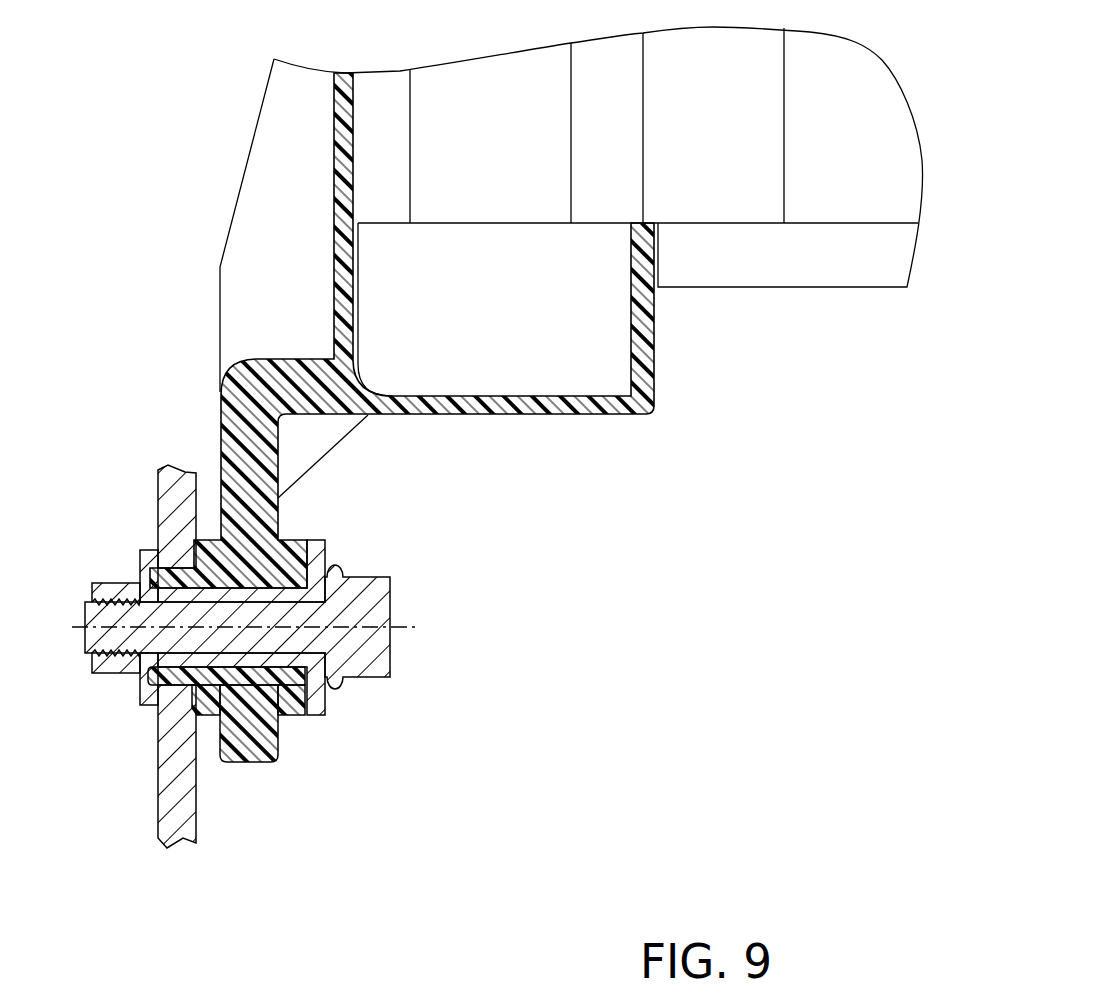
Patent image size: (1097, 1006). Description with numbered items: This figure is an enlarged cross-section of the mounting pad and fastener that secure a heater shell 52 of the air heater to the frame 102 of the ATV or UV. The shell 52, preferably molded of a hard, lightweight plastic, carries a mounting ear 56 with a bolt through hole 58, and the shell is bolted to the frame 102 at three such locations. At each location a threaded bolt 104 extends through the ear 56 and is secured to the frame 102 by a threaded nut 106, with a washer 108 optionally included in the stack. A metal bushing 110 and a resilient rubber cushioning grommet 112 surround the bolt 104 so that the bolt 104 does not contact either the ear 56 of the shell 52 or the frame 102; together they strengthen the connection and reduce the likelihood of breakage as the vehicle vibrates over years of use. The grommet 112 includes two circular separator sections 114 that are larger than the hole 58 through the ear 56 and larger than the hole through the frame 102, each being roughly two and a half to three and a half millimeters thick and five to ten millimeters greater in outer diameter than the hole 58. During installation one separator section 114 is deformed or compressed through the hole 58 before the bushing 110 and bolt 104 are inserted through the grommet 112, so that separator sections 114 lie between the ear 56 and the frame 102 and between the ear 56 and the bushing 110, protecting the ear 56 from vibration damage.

The left shell 52 is at (283, 208).
The mounting ear 56 is at (233, 458).
The bolt through hole 58 is at (258, 717).
The frame 102 is at (173, 480).
The threaded bolt 104 is at (377, 597).
The threaded nut 106 is at (98, 663).
The washer 108 is at (143, 678).
The bushing 110 is at (323, 537).
The resilient cushioning grommet 112 is at (140, 597).
The separator section 114 is at (200, 717).